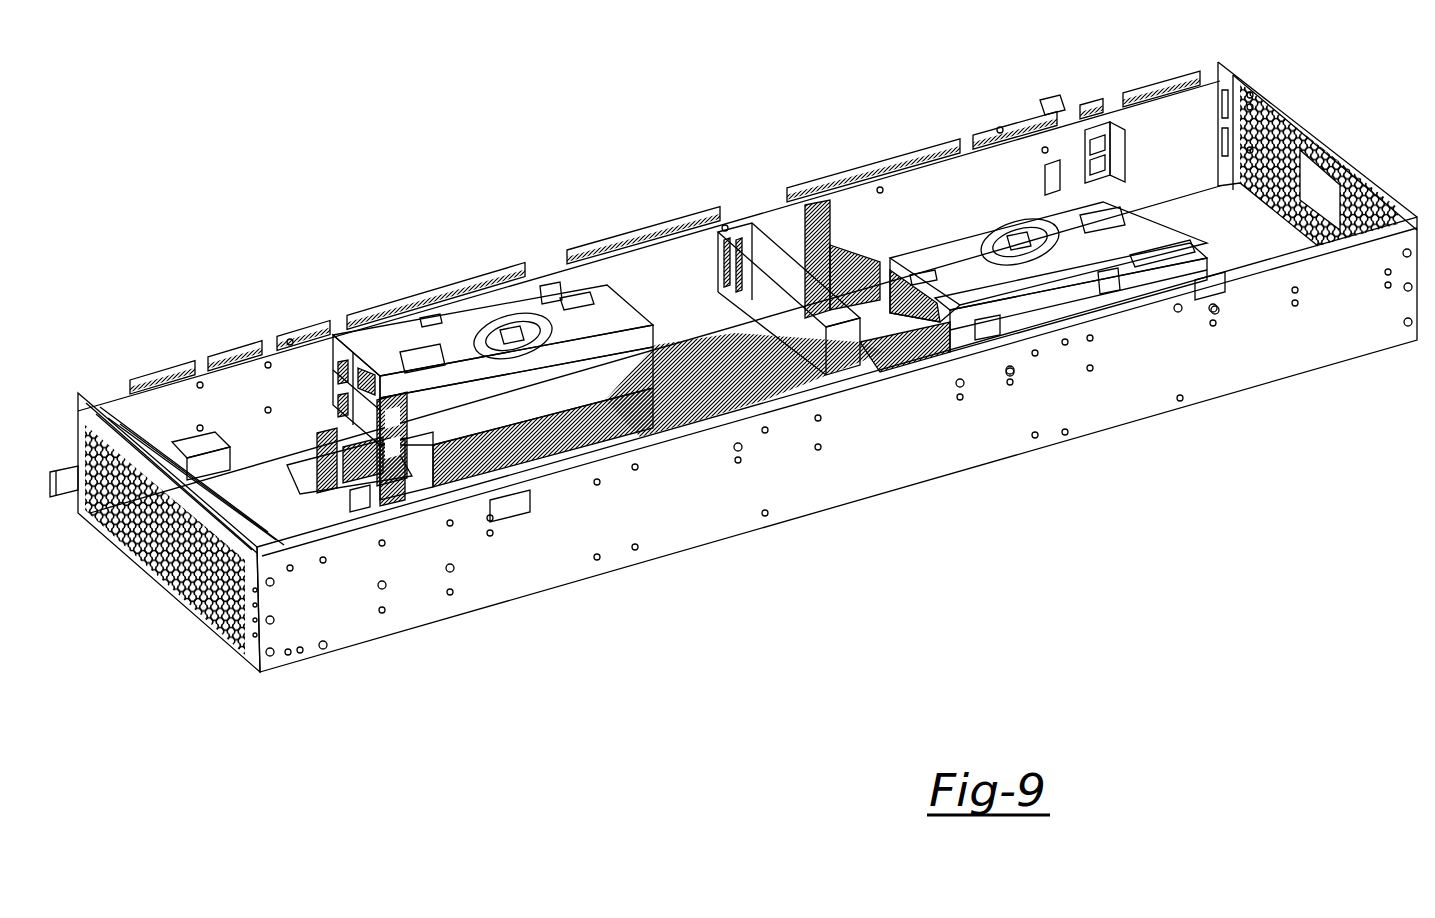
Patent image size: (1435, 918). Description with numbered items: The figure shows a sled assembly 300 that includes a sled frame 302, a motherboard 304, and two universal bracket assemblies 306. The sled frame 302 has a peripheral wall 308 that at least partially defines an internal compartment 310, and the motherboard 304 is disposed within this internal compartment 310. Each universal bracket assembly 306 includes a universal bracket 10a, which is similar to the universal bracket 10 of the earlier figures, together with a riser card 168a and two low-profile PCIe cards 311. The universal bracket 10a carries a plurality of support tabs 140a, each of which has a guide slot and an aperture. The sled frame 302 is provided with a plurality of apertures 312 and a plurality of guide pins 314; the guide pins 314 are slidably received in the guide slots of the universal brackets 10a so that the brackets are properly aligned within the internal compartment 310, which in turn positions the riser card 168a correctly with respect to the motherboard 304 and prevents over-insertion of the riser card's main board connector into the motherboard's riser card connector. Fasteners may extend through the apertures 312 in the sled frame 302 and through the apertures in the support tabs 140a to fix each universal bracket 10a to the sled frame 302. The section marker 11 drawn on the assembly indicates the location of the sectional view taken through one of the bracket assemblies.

The sled assembly 300 is at (224, 259).
The sled frame 302 is at (1302, 115).
The motherboard 304 is at (312, 462).
The universal bracket assembly 306 is at (726, 261).
The peripheral wall 308 is at (850, 478).
The internal compartment 310 is at (790, 262).
The low-profile PCIe card 311 is at (940, 252).
The aperture 312 is at (1044, 152).
The guide pin 314 is at (1050, 187).
The support tab 140a is at (330, 326).
The riser card 168a is at (545, 292).
The universal bracket 10a is at (1130, 280).
The universal bracket 10 is at (1040, 100).
The section view indicator 11 is at (502, 233).